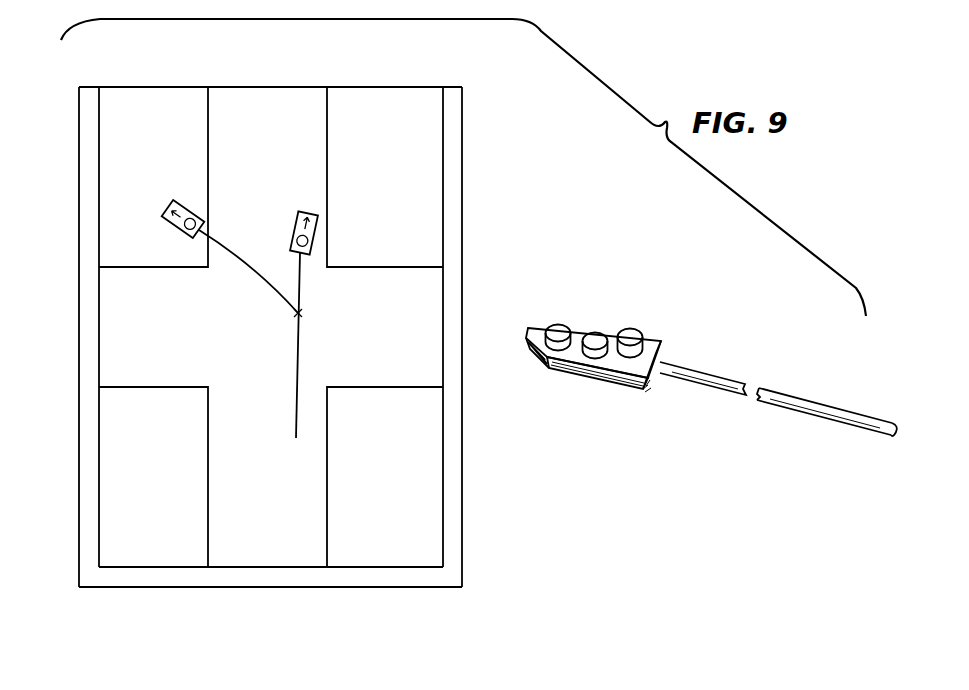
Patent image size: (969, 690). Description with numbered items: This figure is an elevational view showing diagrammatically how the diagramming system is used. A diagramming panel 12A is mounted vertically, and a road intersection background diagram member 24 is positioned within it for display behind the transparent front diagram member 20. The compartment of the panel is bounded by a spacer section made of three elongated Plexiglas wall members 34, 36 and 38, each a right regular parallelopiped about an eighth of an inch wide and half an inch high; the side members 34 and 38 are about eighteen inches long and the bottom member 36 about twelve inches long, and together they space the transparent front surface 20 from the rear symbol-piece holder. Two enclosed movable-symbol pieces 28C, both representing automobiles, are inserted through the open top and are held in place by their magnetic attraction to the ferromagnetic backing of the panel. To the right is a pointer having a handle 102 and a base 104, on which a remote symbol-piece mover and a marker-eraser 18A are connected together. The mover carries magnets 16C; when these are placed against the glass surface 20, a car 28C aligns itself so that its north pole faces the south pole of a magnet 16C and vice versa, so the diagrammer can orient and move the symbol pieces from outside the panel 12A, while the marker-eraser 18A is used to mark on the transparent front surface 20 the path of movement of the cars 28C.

The diagramming panel 12A is at (391, 86).
The road intersection background diagram member 24 is at (163, 95).
The transparent front diagram member 20 is at (430, 160).
The elongated plastic wall member 34 is at (79, 190).
The elongated plastic wall member 36 is at (297, 587).
The elongated plastic wall member 38 is at (463, 230).
The movable-symbol piece 28C is at (190, 208).
The magnet 16C is at (579, 330).
The marker-eraser 18A is at (642, 330).
The base 104 is at (602, 382).
The handle 102 is at (810, 400).